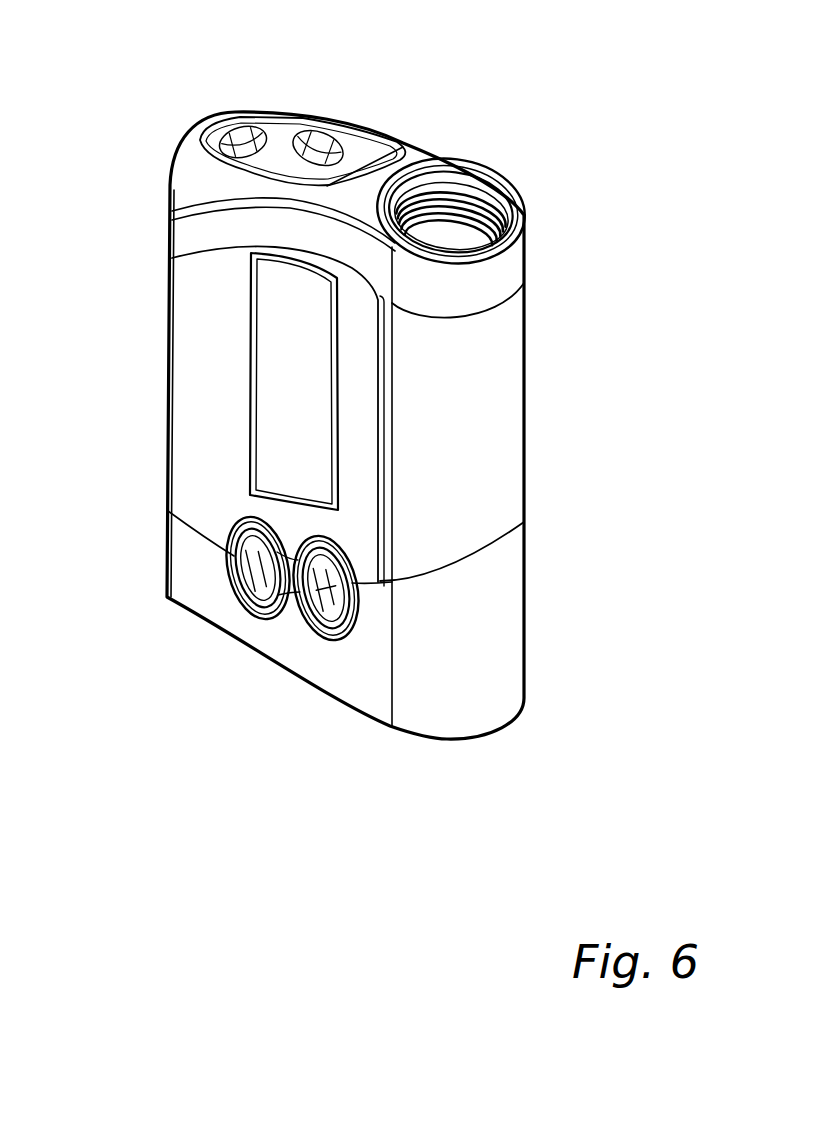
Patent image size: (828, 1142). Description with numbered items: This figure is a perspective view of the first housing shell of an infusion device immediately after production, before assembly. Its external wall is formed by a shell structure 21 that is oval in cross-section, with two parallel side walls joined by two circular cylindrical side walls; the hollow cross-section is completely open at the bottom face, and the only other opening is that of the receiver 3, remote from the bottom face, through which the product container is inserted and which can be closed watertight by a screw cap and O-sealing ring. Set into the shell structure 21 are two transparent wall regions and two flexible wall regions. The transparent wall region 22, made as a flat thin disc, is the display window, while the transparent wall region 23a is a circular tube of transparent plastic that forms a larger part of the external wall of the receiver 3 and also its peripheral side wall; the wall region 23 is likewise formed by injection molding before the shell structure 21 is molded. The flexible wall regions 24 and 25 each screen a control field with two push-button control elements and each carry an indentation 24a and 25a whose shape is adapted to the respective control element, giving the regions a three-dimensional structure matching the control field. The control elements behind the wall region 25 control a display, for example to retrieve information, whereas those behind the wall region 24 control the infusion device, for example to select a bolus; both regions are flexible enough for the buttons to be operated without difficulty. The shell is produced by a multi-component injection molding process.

The receiver 3 is at (358, 403).
The shell structure 21 is at (190, 297).
The transparent wall region 22 is at (300, 313).
The wall region 23 is at (443, 243).
The transparent wall region 23a is at (510, 437).
The flexible wall region 24 is at (317, 138).
The indentation 24a is at (378, 130).
The flexible wall region 25 is at (265, 656).
The indentation 25a is at (248, 607).